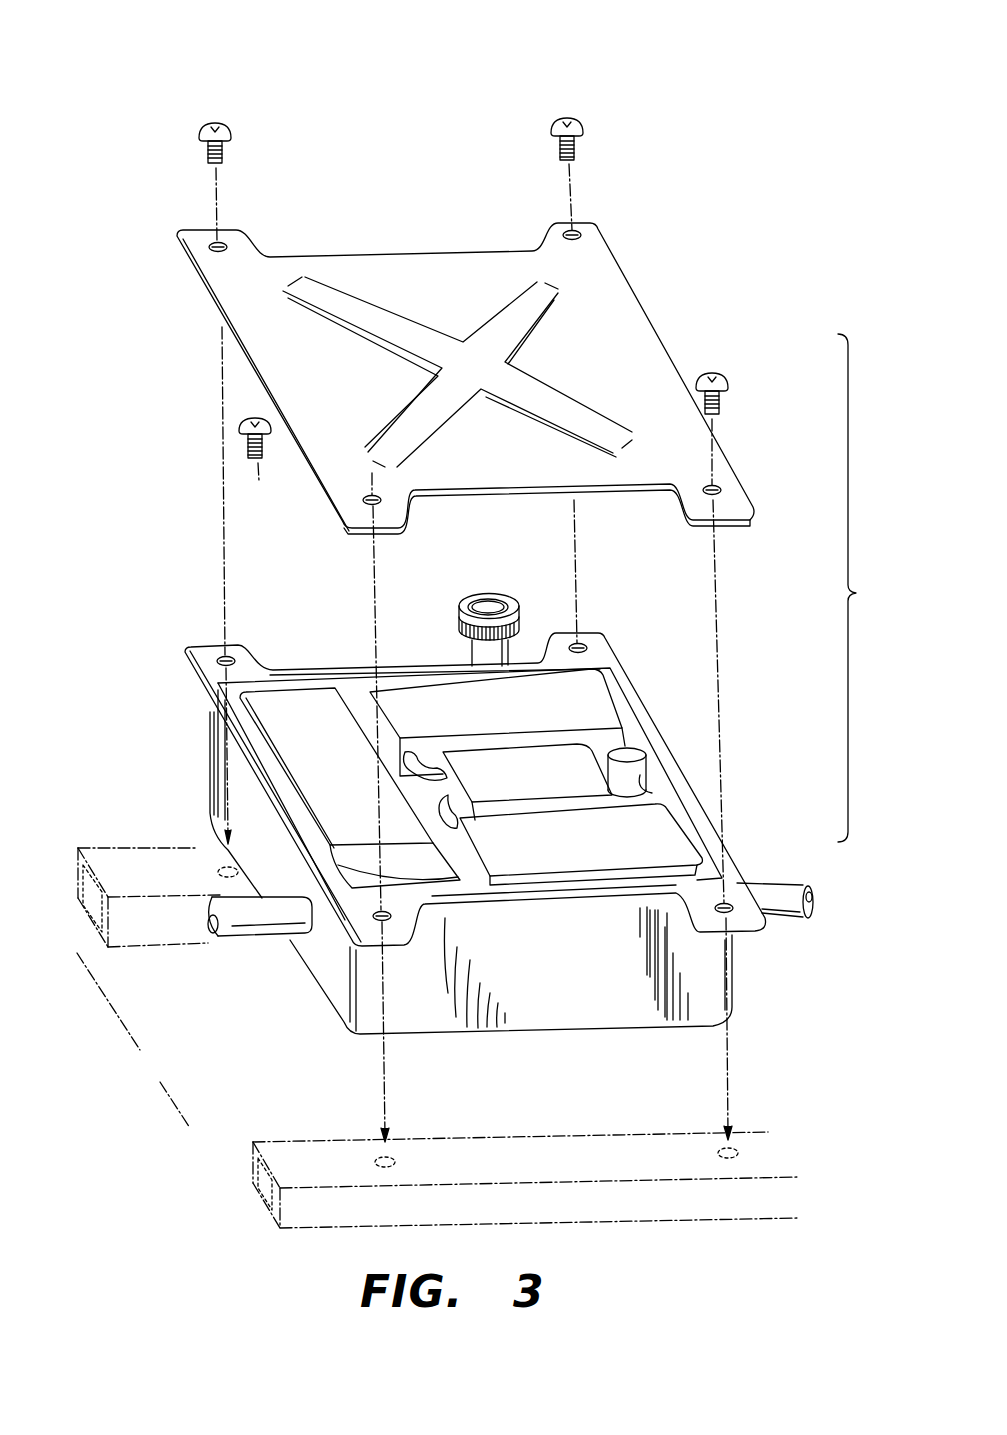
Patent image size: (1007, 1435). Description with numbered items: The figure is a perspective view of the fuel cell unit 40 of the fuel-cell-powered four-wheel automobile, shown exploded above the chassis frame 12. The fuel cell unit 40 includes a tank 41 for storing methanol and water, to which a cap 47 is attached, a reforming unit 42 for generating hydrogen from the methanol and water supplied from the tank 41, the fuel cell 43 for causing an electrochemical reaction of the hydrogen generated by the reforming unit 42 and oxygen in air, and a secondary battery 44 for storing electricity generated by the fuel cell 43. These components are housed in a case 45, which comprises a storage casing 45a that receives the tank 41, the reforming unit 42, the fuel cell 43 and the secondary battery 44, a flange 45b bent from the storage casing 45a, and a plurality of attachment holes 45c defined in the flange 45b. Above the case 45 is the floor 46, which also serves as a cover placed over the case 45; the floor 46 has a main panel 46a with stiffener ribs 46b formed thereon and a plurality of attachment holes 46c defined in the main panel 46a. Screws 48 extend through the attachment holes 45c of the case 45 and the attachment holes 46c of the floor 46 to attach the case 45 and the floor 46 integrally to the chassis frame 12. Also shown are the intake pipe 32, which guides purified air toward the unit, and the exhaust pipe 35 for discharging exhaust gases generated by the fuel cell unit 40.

The chassis frame 12 is at (140, 1050).
The intake pipe 32 is at (248, 938).
The exhaust pipe 35 is at (790, 877).
The fuel cell unit 40 is at (872, 588).
The tank 41 is at (613, 705).
The reforming unit 42 is at (595, 757).
The fuel cell 43 is at (677, 820).
The secondary battery 44 is at (280, 764).
The case 45 is at (555, 1027).
The storage casing 45a is at (402, 680).
The flange 45b is at (322, 668).
The attachment holes 45c is at (217, 667).
The floor 46 is at (638, 275).
The main panel 46a is at (390, 280).
The stiffener ribs 46b is at (478, 322).
The attachment holes 46c is at (578, 240).
The cap 47 is at (492, 592).
The screws 48 is at (233, 118).